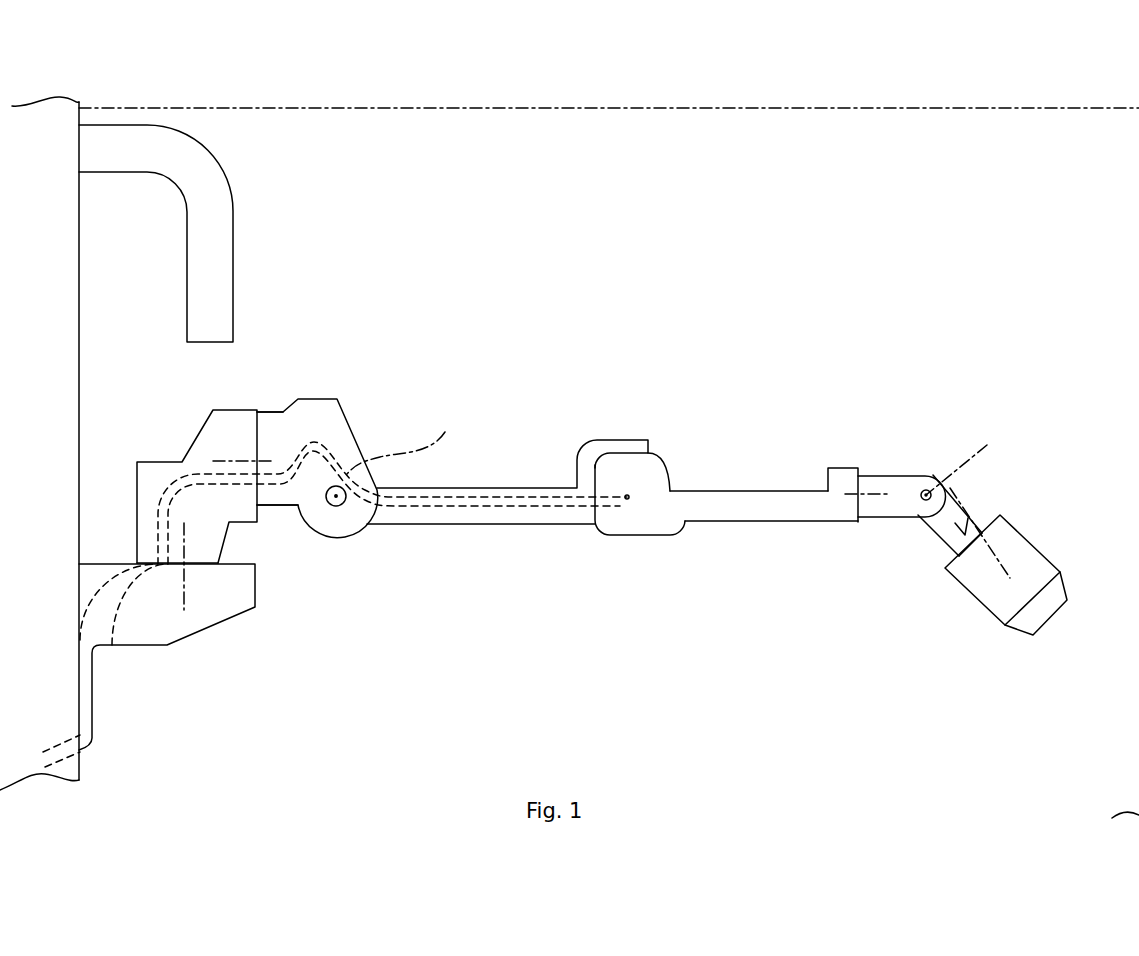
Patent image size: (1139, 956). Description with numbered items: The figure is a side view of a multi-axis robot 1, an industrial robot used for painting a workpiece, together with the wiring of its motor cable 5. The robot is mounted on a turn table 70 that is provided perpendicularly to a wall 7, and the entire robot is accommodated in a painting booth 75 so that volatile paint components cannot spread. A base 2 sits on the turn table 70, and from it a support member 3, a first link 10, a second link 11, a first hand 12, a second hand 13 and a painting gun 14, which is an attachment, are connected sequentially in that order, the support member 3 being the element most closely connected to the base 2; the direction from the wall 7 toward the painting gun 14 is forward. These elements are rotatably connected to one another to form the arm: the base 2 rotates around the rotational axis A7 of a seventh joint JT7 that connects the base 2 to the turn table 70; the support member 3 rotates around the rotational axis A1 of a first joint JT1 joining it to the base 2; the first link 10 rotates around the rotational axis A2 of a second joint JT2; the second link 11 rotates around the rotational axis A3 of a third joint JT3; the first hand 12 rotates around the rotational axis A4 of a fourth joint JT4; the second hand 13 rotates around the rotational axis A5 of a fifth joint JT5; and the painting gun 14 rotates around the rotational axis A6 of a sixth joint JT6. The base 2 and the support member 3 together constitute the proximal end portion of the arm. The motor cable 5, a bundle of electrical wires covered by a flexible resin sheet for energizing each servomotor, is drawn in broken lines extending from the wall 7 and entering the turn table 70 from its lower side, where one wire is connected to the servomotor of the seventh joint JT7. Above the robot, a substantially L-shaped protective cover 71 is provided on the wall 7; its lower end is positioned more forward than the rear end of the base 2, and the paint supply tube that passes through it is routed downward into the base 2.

The multi-axis robot 1 is at (587, 591).
The base 2 is at (157, 472).
The support member 3 is at (342, 525).
The motor cable 5 is at (470, 507).
The wall 7 is at (63, 268).
The first link 10 is at (503, 488).
The second link 11 is at (748, 505).
The first hand 12 is at (903, 507).
The second hand 13 is at (958, 500).
The painting gun 14 is at (1025, 557).
The turn table 70 is at (165, 628).
The protective cover 71 is at (218, 258).
The painting booth 75 is at (755, 104).
The first joint JT1 is at (257, 438).
The second joint JT2 is at (336, 496).
The third joint JT3 is at (637, 510).
The fourth joint JT4 is at (857, 508).
The fifth joint JT5 is at (913, 485).
The sixth joint JT6 is at (962, 543).
The seventh joint JT7 is at (197, 565).
The rotational axis A1 is at (240, 460).
The rotational axis A2 is at (406, 439).
The rotational axis A3 is at (628, 496).
The rotational axis A4 is at (845, 494).
The rotational axis A5 is at (987, 445).
The rotational axis A6 is at (958, 500).
The rotational axis A7 is at (187, 590).